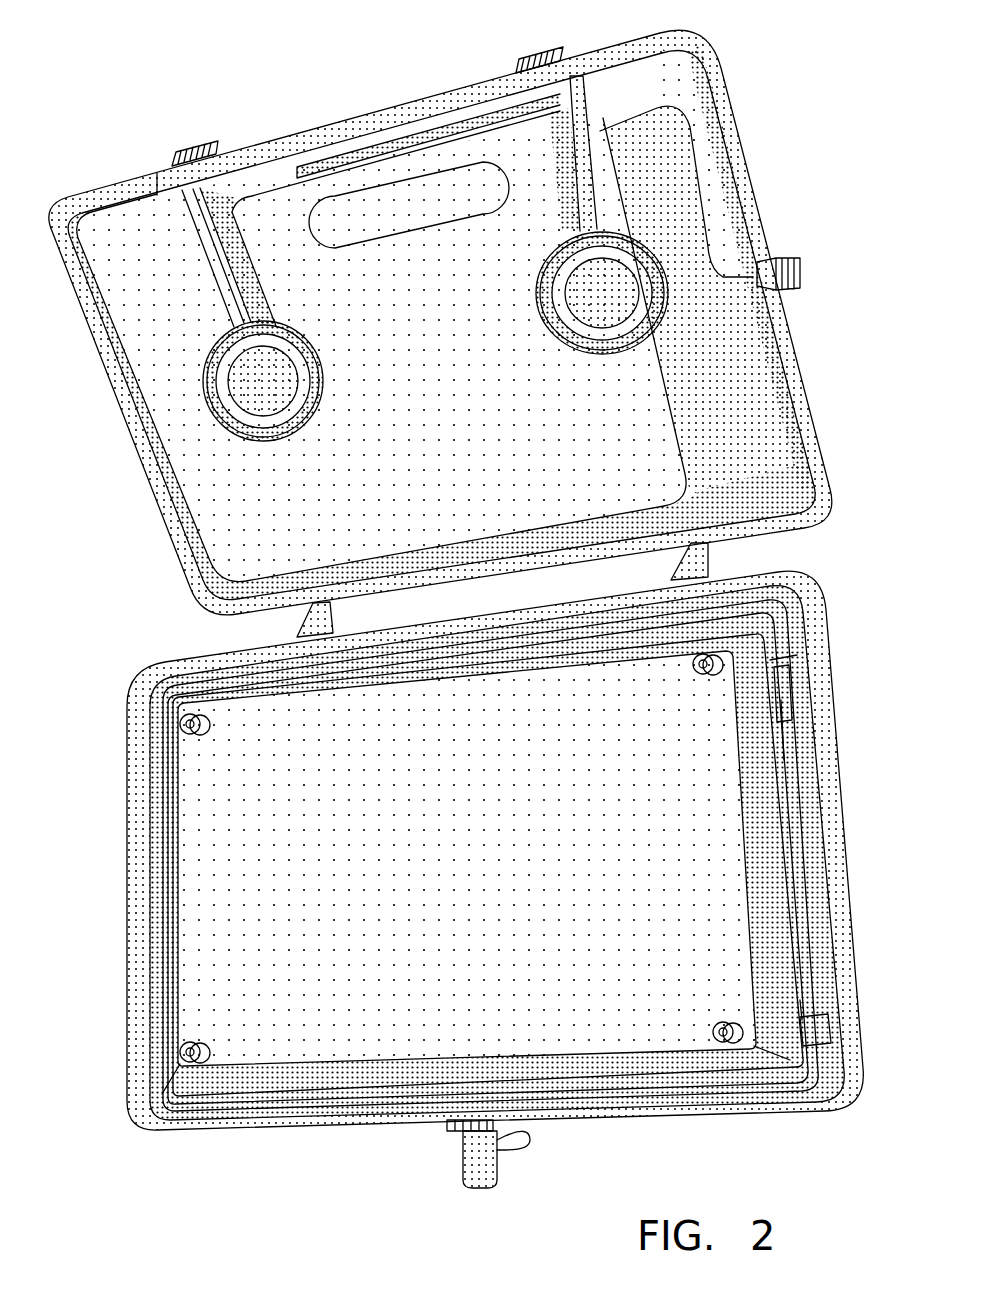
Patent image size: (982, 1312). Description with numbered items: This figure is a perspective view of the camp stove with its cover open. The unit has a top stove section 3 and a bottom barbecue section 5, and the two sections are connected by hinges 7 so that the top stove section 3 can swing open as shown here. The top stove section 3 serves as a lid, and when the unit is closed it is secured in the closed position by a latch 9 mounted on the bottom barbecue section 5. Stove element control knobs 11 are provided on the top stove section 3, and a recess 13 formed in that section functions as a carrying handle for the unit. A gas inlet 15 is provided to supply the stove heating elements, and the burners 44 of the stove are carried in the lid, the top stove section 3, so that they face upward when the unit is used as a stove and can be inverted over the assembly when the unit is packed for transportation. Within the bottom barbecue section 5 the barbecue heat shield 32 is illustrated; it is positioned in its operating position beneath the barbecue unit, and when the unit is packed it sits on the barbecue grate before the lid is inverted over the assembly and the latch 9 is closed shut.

The top stove section 3 is at (749, 137).
The bottom barbecue section 5 is at (837, 717).
The hinges 7 is at (336, 612).
The latch 9 is at (462, 1155).
The stove element control knobs 11 is at (176, 150).
The recess 13 is at (327, 215).
The gas inlet 15 is at (805, 273).
The barbecue heat shield 32 is at (742, 906).
The burners 44 is at (313, 408).